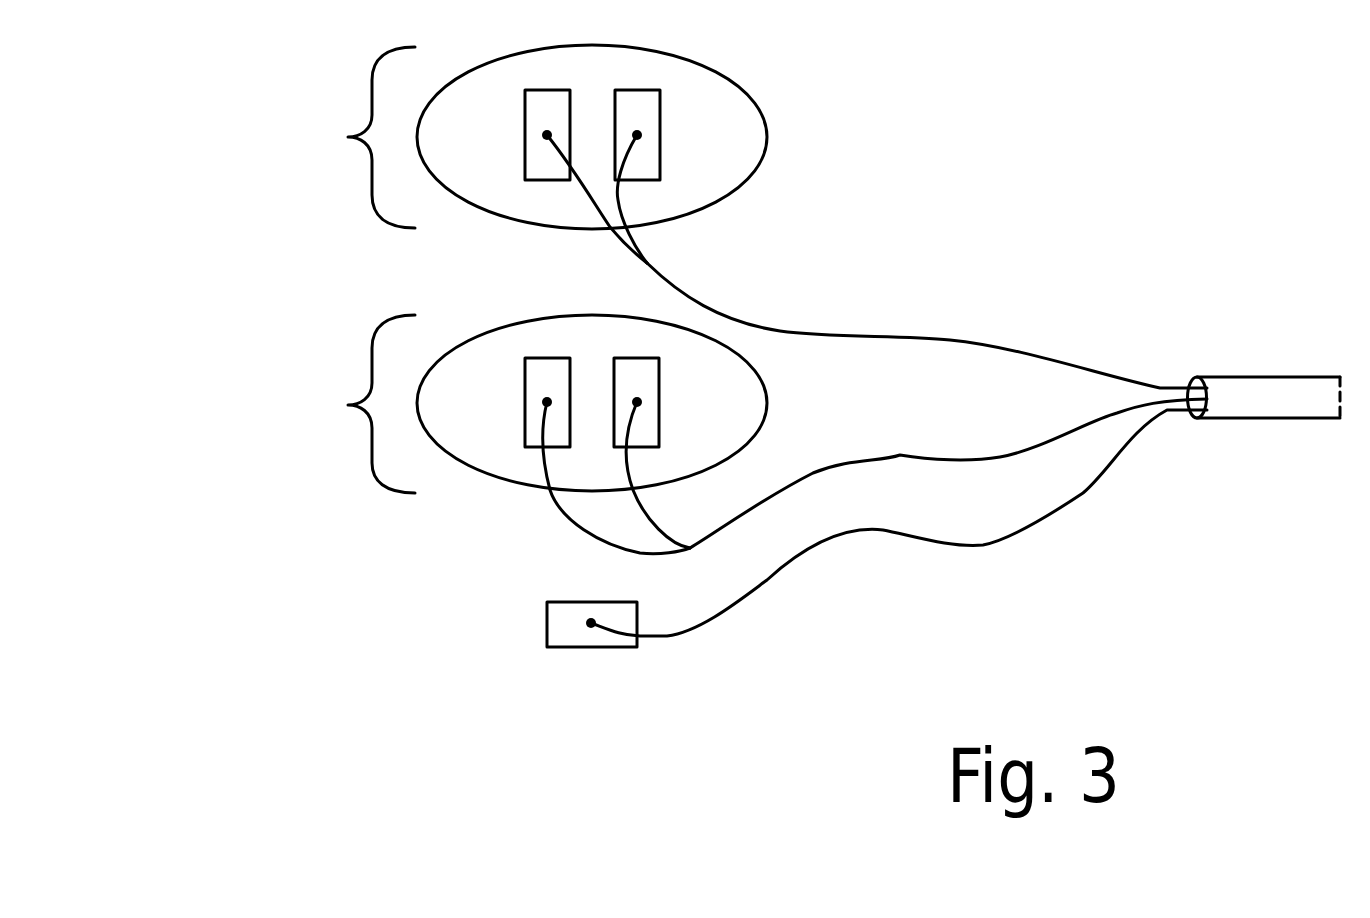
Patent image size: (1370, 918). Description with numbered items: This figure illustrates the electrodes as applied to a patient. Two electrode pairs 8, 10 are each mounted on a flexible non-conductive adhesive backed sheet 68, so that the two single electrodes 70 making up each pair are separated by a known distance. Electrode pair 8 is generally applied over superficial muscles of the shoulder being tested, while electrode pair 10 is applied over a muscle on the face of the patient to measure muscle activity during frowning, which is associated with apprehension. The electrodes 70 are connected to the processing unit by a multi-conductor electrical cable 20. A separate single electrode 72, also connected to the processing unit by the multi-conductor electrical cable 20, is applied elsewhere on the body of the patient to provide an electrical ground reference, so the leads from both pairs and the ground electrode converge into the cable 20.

The electrode pair 8 is at (340, 138).
The electrode pair 10 is at (340, 405).
The multi-conductor electrical cable 20 is at (1230, 397).
The flexible non-conductive adhesive backed sheet 68 is at (703, 180).
The single electrode 70 is at (547, 113).
The single electrode 72 is at (572, 623).